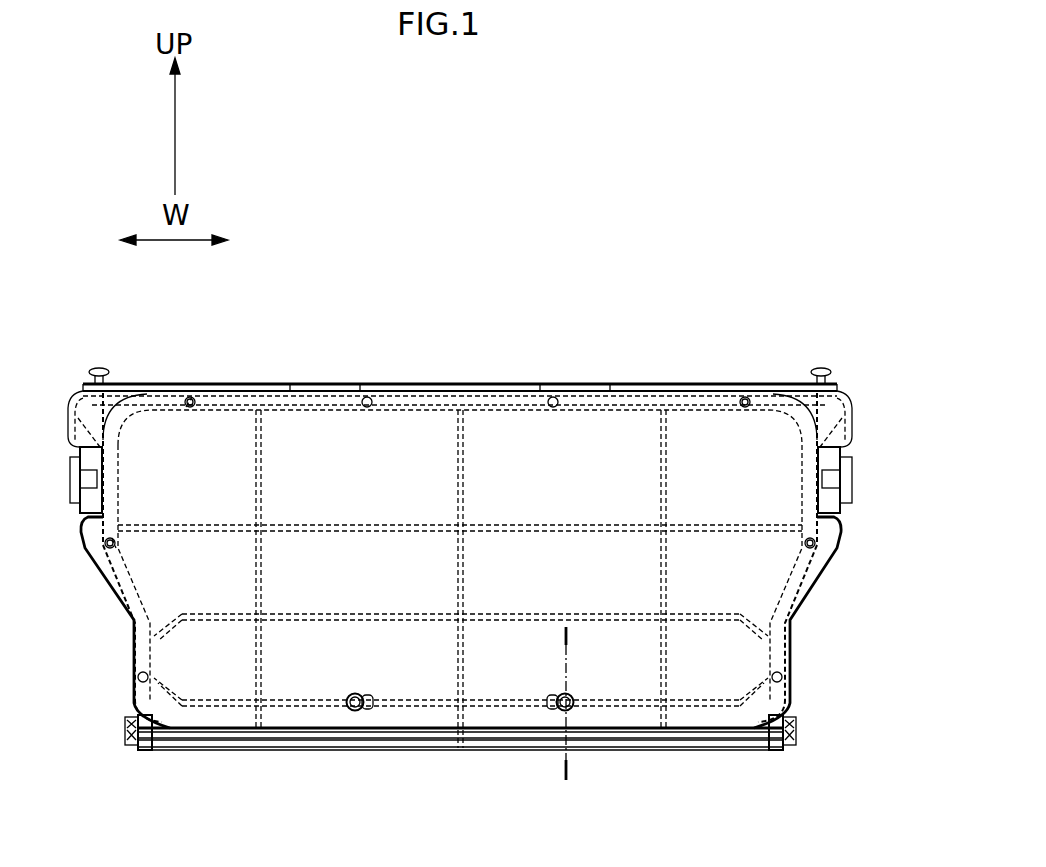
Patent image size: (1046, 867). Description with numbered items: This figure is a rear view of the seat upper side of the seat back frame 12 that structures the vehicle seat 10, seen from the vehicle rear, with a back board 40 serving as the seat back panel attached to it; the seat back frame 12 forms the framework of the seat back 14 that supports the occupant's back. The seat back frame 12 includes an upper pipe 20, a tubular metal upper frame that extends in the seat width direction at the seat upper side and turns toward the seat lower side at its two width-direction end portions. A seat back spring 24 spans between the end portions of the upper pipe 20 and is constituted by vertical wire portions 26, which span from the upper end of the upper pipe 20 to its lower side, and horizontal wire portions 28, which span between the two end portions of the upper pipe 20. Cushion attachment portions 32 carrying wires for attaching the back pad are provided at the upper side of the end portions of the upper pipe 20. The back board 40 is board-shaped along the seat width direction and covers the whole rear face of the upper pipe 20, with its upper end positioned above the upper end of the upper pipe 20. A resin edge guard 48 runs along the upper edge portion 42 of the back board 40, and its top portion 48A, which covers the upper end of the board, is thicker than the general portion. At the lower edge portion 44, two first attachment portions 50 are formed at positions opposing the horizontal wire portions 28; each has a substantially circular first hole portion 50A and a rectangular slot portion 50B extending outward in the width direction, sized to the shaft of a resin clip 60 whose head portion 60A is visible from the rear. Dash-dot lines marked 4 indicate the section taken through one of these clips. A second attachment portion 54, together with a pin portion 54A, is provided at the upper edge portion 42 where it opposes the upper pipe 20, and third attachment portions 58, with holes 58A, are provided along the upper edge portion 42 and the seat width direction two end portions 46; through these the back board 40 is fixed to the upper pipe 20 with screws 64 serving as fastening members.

The vehicle seat 10 is at (715, 158).
The seat back frame 12 is at (658, 288).
The seat back 14 is at (463, 524).
The upper pipe 20 is at (810, 429).
The seat back spring 24 is at (666, 573).
The vertical wire portions 26 is at (668, 672).
The horizontal wire portions 28 is at (720, 620).
The cushion attachment portions 32 is at (848, 500).
The back board 40 is at (97, 573).
The upper edge portion 42 is at (435, 398).
The lower edge portion 44 is at (421, 720).
The seat width direction two end portions 46 is at (88, 526).
The edge guard 48 is at (299, 382).
The top portion 48A is at (350, 383).
The first attachment portions 50 is at (365, 712).
The first hole portion 50A is at (372, 697).
The slot portion 50B is at (348, 712).
The second attachment portion 54 is at (550, 397).
The hinge pin 54A is at (562, 400).
The third attachment portions 58 is at (193, 407).
The screw hole 58A is at (188, 407).
The resin clip 60 is at (575, 696).
The head portion 60A is at (350, 696).
The screws 64 is at (190, 396).
The section line 4- 4 is at (568, 770).